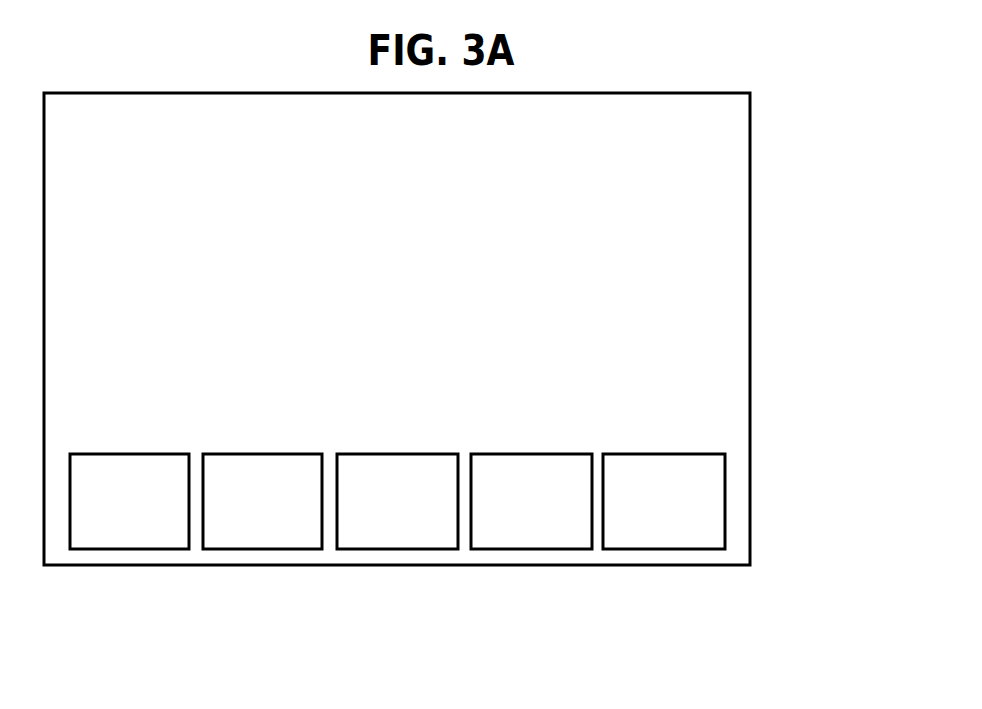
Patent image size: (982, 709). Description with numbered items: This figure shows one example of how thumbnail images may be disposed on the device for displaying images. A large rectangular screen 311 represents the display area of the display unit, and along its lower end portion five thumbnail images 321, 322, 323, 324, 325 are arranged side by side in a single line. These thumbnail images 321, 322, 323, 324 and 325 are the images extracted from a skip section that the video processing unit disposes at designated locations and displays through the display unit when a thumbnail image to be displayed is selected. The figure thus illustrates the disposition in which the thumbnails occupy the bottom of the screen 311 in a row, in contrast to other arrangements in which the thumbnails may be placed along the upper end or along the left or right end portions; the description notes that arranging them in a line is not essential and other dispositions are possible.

The display screen 311 is at (736, 287).
The thumbnail image 321 is at (127, 549).
The thumbnail image 322 is at (259, 549).
The thumbnail image 323 is at (393, 549).
The thumbnail image 324 is at (529, 549).
The thumbnail image 325 is at (662, 549).